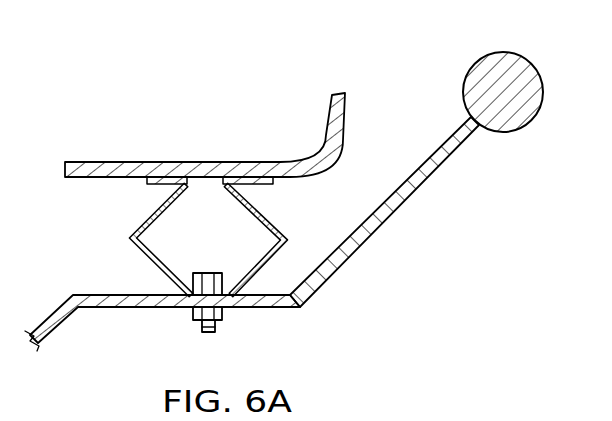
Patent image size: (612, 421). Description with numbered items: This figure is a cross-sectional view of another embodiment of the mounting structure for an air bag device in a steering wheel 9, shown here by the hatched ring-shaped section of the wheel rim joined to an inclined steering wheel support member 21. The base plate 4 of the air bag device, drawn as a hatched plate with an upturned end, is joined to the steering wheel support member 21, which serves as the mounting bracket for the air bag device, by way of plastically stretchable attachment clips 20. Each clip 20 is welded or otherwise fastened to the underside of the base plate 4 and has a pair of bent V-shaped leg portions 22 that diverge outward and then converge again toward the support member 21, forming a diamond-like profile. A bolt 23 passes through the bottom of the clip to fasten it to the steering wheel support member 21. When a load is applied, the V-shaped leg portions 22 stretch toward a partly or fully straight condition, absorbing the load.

The base plate 4 is at (79, 167).
The steering wheel 9 is at (527, 70).
The attachment clip 20 is at (202, 237).
The steering wheel support member 21 is at (397, 200).
The V-shaped leg portions 22 is at (143, 243).
The bolt 23 is at (210, 273).